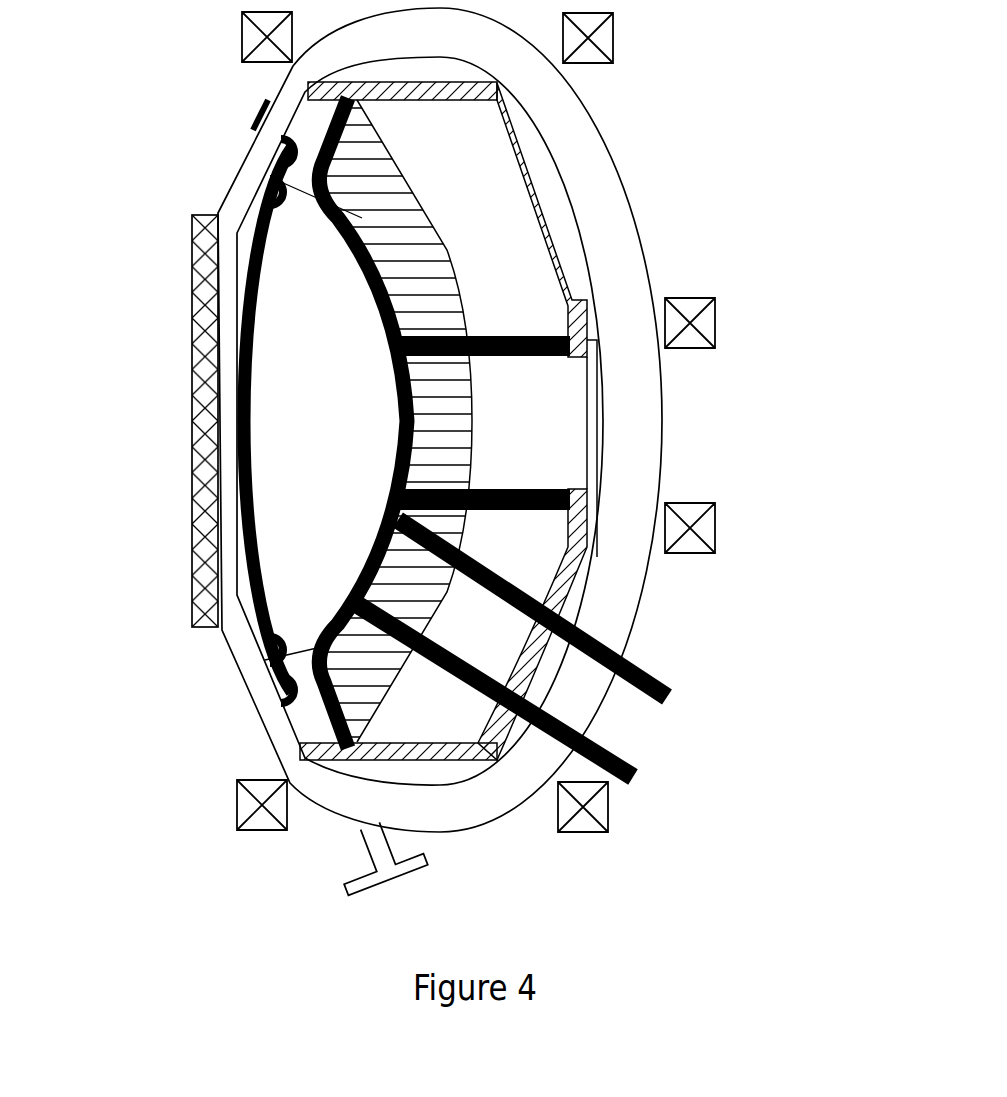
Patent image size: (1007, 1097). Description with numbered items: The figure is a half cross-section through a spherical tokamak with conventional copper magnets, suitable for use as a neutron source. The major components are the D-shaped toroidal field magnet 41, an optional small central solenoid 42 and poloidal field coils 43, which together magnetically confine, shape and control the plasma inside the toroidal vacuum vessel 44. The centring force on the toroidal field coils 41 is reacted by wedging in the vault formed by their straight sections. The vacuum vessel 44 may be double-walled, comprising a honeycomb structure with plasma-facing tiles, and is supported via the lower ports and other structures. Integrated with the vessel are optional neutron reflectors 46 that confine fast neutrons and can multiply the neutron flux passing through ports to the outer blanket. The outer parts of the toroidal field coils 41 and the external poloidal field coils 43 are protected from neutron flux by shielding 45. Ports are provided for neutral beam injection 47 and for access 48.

The toroidal field magnet 41 is at (577, 150).
The central solenoid 42 is at (190, 375).
The poloidal field coils 43 is at (722, 530).
The toroidal vacuum vessel 44 is at (362, 218).
The shielding 45 is at (520, 540).
The neutron reflectors 46 is at (425, 262).
The neutral beam injection port 47 is at (635, 730).
The access port 48 is at (545, 418).